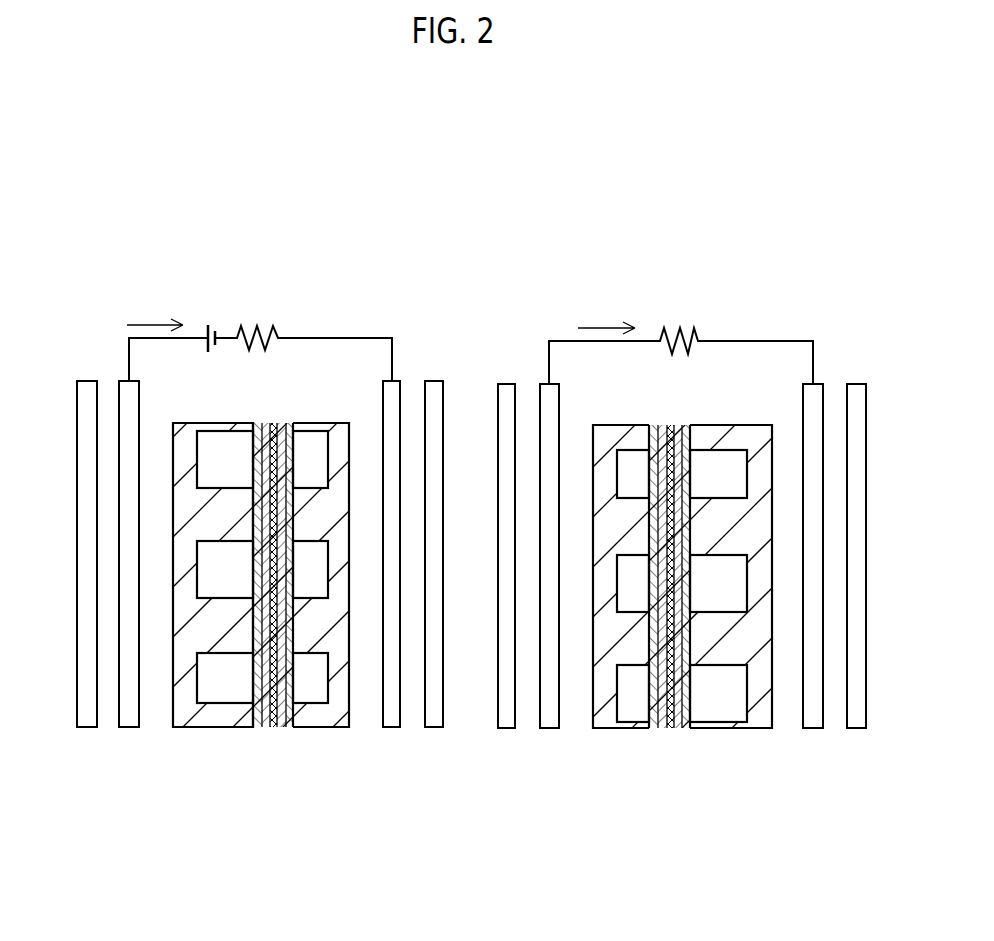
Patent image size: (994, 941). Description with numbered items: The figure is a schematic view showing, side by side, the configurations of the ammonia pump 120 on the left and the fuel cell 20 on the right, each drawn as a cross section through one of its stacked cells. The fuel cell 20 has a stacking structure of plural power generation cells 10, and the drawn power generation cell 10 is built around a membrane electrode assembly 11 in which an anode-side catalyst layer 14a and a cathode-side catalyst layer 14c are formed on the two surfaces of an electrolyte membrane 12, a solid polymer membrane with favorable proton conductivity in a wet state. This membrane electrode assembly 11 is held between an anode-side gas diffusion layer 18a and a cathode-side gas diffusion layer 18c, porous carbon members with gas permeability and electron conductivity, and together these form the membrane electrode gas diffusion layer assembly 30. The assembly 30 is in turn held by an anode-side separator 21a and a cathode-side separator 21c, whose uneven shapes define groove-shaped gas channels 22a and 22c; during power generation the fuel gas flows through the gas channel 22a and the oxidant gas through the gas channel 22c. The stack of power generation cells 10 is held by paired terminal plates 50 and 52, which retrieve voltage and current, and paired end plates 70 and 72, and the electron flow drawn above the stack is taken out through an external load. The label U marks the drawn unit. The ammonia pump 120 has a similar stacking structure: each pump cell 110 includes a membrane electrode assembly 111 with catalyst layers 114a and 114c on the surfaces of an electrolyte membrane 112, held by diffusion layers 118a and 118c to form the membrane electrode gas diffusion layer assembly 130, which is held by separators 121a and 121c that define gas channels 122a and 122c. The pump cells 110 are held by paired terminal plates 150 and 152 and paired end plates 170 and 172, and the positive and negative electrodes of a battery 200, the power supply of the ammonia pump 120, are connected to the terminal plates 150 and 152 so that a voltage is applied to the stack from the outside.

The ammonia pump 120 is at (325, 310).
The battery 200 is at (221, 327).
The end plate 172 is at (87, 727).
The terminal plate 152 is at (129, 727).
The terminal plate 150 is at (392, 727).
The end plate 170 is at (434, 727).
The pump cell 110 is at (332, 862).
The separator 121c is at (191, 712).
The separator 121a is at (345, 712).
The gas channel 122c is at (240, 450).
The gas channel 122a is at (310, 447).
The membrane electrode gas diffusion layer assembly 130 is at (295, 418).
The membrane electrode assembly 111 is at (217, 816).
The diffusion layer 118c is at (257, 727).
The catalyst layer 114c is at (260, 732).
The electrolyte membrane 112 is at (272, 729).
The catalyst layer 114a is at (288, 732).
The diffusion layer 118a is at (297, 727).
The cell unit U is at (763, 220).
The fuel cell 20 is at (795, 293).
The end plate 70 is at (506, 728).
The terminal plate 50 is at (551, 728).
The terminal plate 52 is at (813, 728).
The end plate 72 is at (857, 728).
The power generation cell 10 is at (763, 872).
The anode-side separator 21a is at (608, 718).
The cathode-side separator 21c is at (752, 715).
The gas channel 22a is at (628, 450).
The gas channel 22c is at (740, 450).
The membrane electrode gas diffusion layer assembly 30 is at (648, 420).
The membrane electrode assembly 11 is at (612, 821).
The anode-side gas diffusion layer 18a is at (662, 728).
The anode-side catalyst layer 14a is at (653, 732).
The electrolyte membrane 12 is at (672, 729).
The cathode-side catalyst layer 14c is at (688, 732).
The cathode-side gas diffusion layer 18c is at (690, 728).